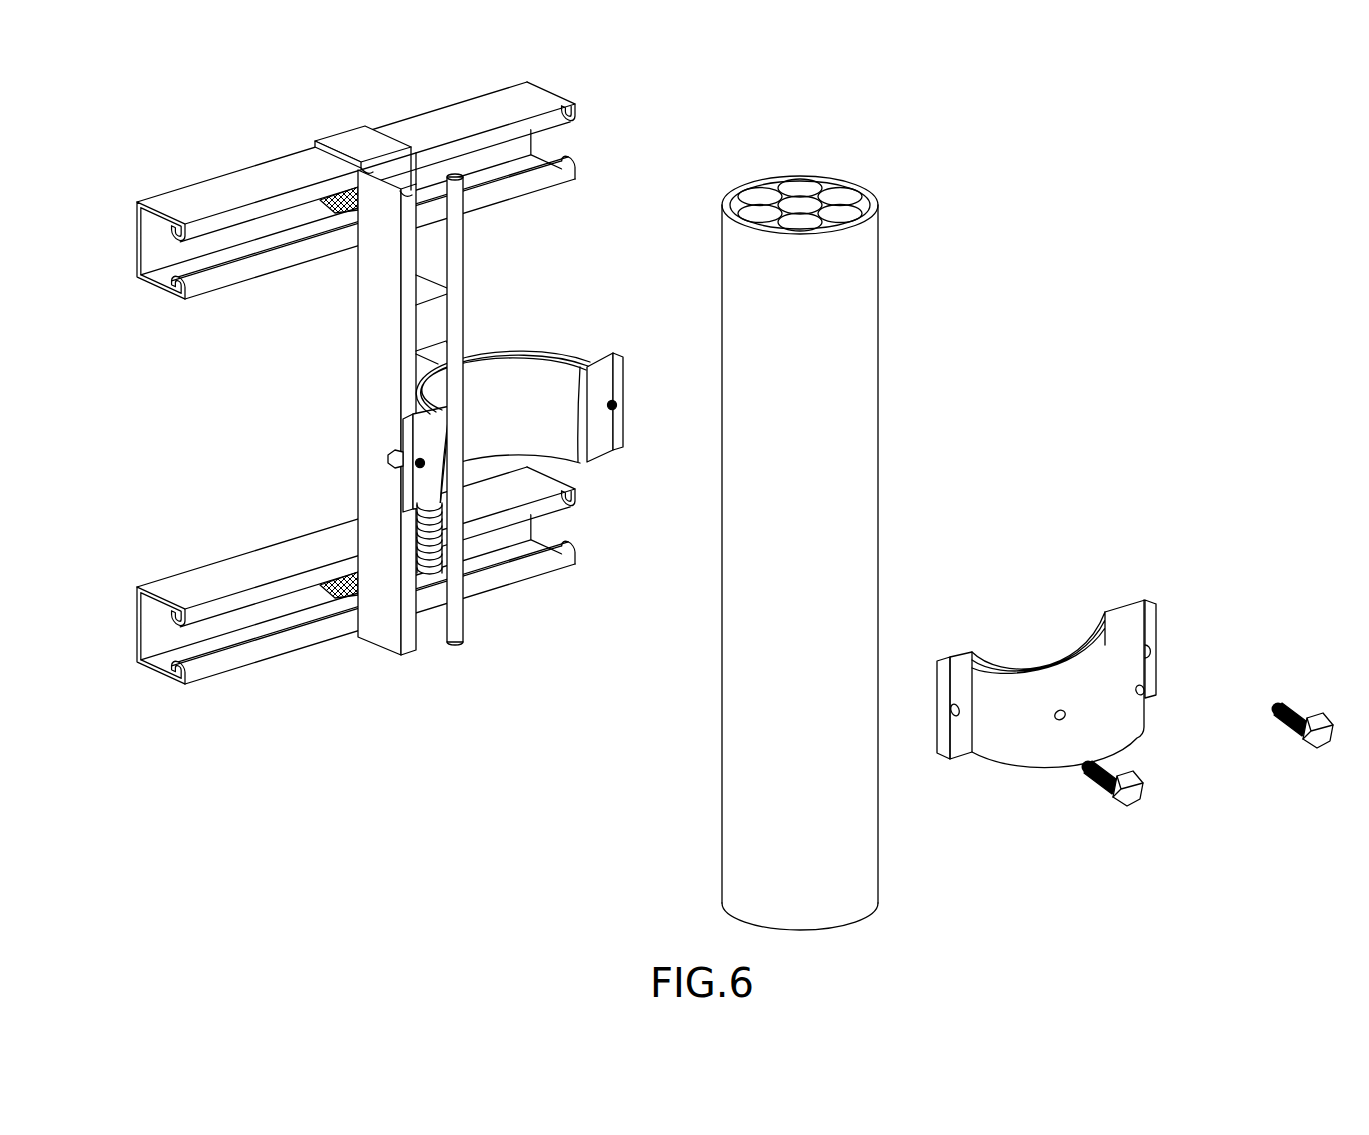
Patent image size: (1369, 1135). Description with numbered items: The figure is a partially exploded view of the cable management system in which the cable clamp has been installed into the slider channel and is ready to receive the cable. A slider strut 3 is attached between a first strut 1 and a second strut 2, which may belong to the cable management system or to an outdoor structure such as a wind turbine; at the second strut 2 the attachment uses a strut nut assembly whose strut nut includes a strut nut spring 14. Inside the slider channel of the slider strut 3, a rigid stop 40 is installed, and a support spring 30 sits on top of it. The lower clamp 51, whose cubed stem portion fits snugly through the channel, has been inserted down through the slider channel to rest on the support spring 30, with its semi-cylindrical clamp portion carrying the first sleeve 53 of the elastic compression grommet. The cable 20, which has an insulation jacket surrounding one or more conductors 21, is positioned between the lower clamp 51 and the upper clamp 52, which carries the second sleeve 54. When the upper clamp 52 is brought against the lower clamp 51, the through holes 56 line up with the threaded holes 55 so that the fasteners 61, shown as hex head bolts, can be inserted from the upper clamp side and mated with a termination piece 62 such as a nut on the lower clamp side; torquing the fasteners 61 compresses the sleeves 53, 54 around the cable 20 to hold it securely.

The first strut 1 is at (202, 192).
The second strut 2 is at (207, 582).
The slider strut 3 is at (373, 500).
The strut nut spring 14 is at (342, 598).
The cable 20 is at (838, 310).
The conductors 21 is at (843, 190).
The support spring 30 is at (434, 546).
The rigid stop 40 is at (430, 582).
The lower clamp 51 is at (495, 392).
The upper clamp 52 is at (1094, 630).
The first sleeve 53 is at (585, 433).
The second sleeve 54 is at (1118, 610).
The threaded holes 55 is at (421, 455).
The through holes 56 is at (955, 700).
The fasteners 61 is at (1305, 743).
The termination piece 62 is at (397, 460).